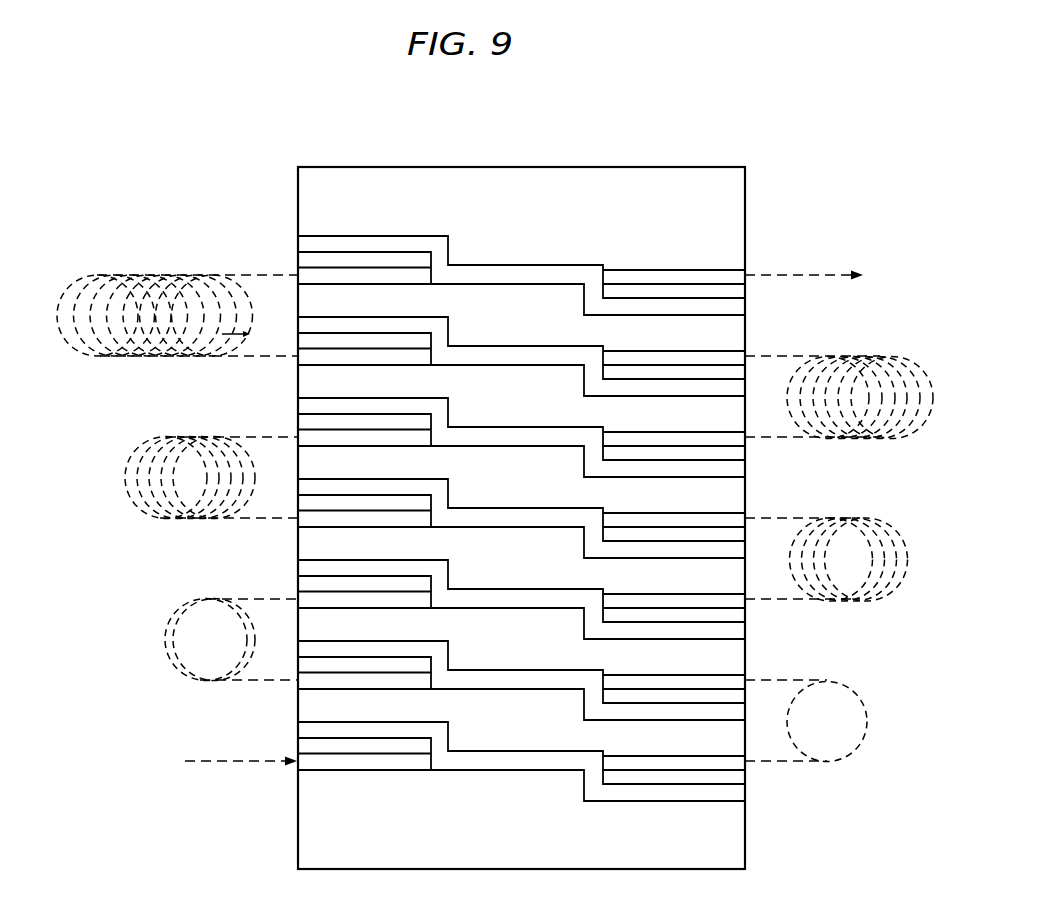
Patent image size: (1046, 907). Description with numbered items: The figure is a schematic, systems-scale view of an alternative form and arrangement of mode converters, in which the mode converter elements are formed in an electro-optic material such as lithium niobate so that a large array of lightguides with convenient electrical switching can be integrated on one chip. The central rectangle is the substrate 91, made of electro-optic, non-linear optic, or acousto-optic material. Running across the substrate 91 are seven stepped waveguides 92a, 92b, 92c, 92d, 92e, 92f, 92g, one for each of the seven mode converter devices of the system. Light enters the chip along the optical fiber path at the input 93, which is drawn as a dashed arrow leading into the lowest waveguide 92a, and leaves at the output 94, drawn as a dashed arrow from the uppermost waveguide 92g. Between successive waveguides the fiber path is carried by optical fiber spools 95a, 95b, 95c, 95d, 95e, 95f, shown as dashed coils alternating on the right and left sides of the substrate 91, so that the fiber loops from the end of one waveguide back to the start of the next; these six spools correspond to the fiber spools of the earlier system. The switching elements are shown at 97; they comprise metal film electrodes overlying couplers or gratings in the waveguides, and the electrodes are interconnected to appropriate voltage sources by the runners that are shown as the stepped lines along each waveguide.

The substrate 91 is at (367, 167).
The waveguide 92a is at (369, 770).
The waveguide 92b is at (374, 689).
The waveguide 92c is at (374, 608).
The waveguide 92d is at (374, 527).
The waveguide 92e is at (374, 446).
The waveguide 92f is at (386, 365).
The waveguide 92g is at (404, 284).
The input 93 is at (222, 761).
The output 94 is at (823, 275).
The optical fiber spool 95a is at (828, 763).
The optical fiber spool 95b is at (198, 678).
The optical fiber spool 95c is at (850, 602).
The optical fiber spool 95d is at (160, 518).
The optical fiber spool 95e is at (847, 440).
The optical fiber spool 95f is at (150, 357).
The switching elements 97 is at (531, 265).